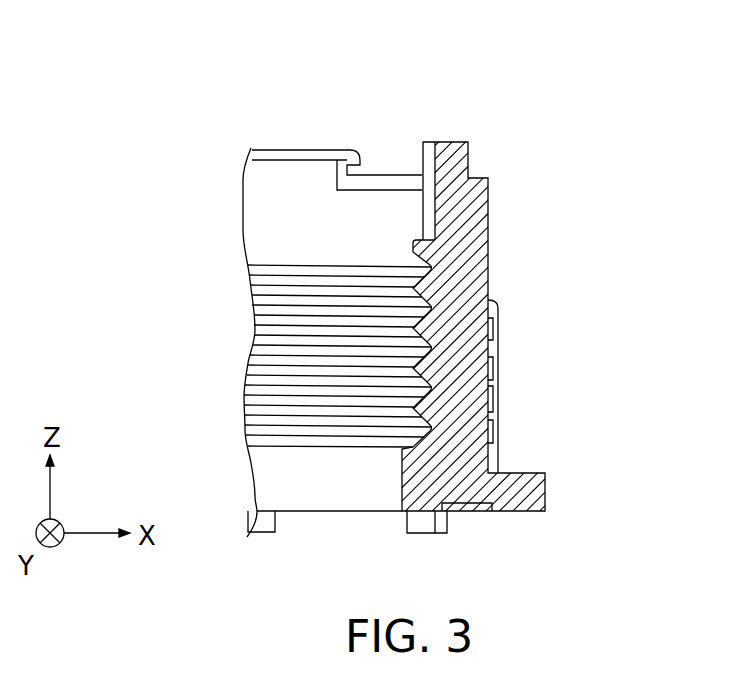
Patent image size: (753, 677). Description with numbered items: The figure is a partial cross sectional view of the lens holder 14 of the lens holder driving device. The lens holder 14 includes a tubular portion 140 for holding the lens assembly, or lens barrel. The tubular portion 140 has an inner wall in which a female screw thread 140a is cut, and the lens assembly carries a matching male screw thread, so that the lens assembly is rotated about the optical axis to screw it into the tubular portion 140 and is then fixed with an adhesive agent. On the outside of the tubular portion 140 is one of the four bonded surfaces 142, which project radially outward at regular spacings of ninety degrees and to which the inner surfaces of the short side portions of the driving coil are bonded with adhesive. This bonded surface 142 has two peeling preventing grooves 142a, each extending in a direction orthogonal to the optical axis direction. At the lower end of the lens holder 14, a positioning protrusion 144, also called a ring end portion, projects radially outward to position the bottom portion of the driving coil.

The lens holder 14 is at (577, 233).
The tubular portion 140 is at (468, 142).
The female screw thread 140a is at (412, 248).
The bonded surface 142 is at (500, 306).
The peeling preventing groove 142a is at (497, 380).
The positioning protrusion 144 is at (520, 510).